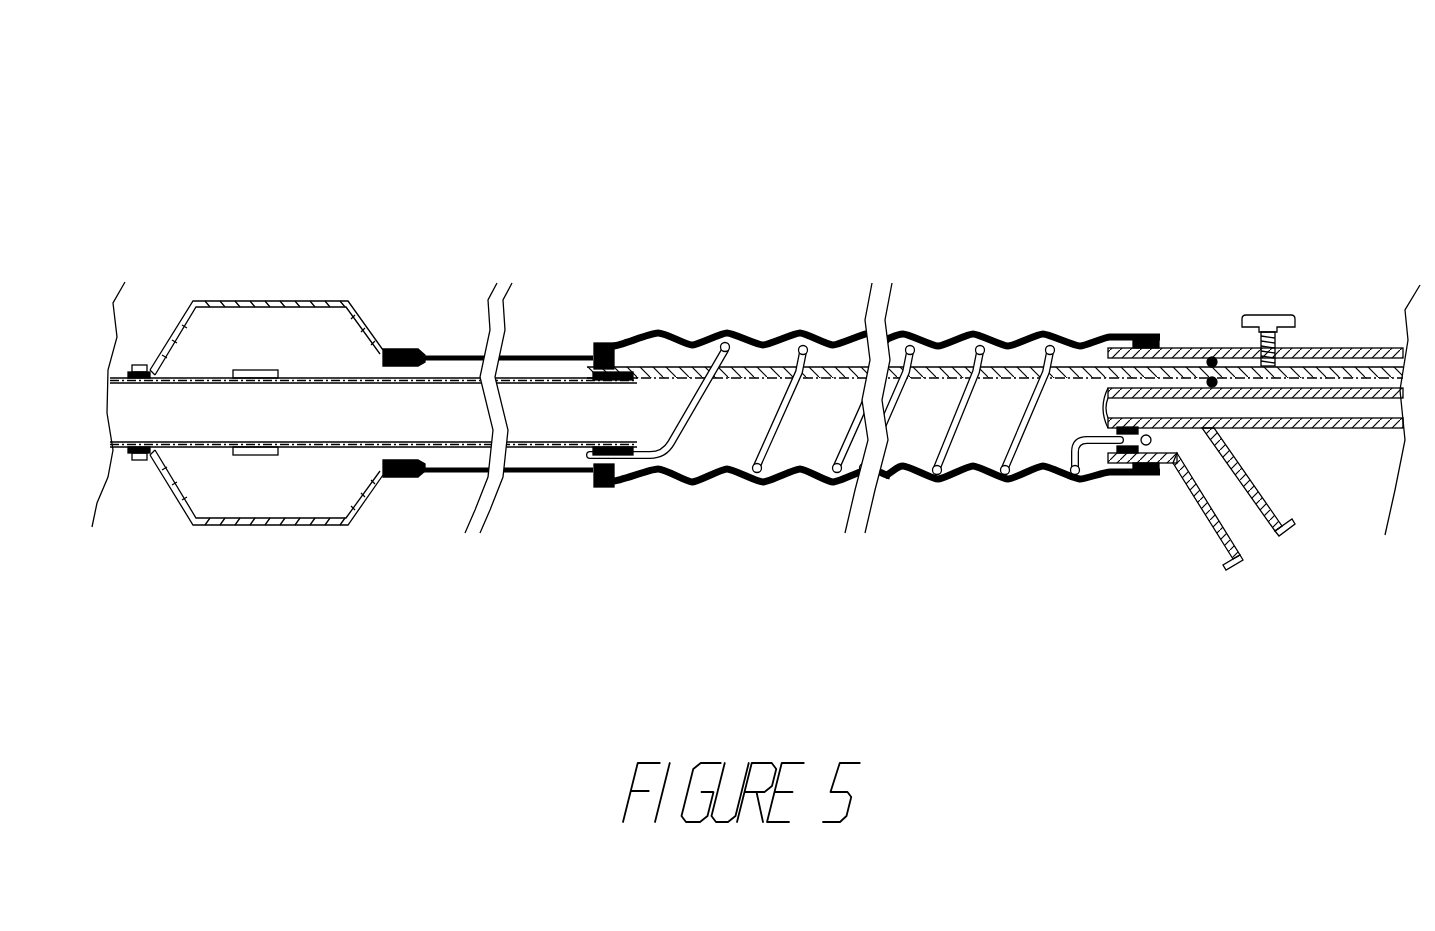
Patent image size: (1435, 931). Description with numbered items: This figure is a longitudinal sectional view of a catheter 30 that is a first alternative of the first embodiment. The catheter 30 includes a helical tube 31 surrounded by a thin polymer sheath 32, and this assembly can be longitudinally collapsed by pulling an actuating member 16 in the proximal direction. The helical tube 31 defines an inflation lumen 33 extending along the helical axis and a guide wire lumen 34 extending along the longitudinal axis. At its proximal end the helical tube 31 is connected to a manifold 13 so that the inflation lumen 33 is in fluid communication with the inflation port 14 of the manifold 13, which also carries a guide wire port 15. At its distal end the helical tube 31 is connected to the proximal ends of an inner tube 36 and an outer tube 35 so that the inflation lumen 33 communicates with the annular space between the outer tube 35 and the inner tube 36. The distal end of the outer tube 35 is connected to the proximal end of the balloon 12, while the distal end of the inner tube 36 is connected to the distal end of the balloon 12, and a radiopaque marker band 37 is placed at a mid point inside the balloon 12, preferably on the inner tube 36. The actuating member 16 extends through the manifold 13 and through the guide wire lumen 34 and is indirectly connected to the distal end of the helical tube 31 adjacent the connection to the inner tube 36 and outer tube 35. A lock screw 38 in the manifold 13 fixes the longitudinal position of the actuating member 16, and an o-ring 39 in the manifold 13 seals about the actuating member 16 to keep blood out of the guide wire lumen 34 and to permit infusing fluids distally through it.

The balloon 12 is at (273, 199).
The manifold 13 is at (1339, 560).
The inflation port 14 is at (1222, 533).
The guide wire port 15 is at (1363, 428).
The actuating member 16 is at (684, 352).
The catheter 30 is at (874, 116).
The helical tube 31 is at (777, 430).
The thin polymer sheath 32 is at (675, 473).
The inflation lumen 33 is at (238, 495).
The guide wire lumen 34 is at (188, 433).
The outer tube 35 is at (459, 358).
The inner tube 36 is at (460, 450).
The radiopaque marker band 37 is at (260, 450).
The lock screw 38 is at (1272, 316).
The o-ring 39 is at (1208, 347).